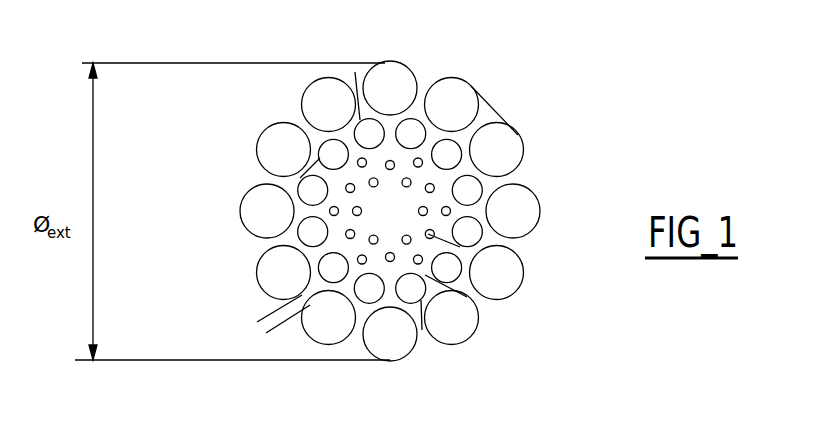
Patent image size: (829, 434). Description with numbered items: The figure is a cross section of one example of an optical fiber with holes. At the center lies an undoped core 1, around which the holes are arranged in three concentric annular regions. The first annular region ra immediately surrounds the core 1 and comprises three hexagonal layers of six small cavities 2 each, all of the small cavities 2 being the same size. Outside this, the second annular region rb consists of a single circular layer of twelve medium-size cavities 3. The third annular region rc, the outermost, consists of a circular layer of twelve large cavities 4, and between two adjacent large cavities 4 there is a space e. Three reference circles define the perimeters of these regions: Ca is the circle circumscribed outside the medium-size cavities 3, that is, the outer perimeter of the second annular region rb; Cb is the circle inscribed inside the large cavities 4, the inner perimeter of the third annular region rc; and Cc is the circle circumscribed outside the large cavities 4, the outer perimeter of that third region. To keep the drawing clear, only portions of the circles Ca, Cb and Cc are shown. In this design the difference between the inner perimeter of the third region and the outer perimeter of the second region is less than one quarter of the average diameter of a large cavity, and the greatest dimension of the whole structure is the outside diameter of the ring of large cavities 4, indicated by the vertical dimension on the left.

The core 1 is at (392, 210).
The small cavities 2 is at (348, 234).
The medium-size cavities 3 is at (362, 295).
The large cavities 4 is at (524, 274).
The circle circumscribed outside the medium-size cavities Ca is at (300, 178).
The circle inscribed inside the large cavities Cb is at (355, 72).
The circle circumscribed outside the large cavities Cc is at (498, 105).
The first annular region ra is at (460, 247).
The second annular region rb is at (467, 297).
The third annular region rc is at (422, 330).
The space between two large cavities e is at (272, 342).